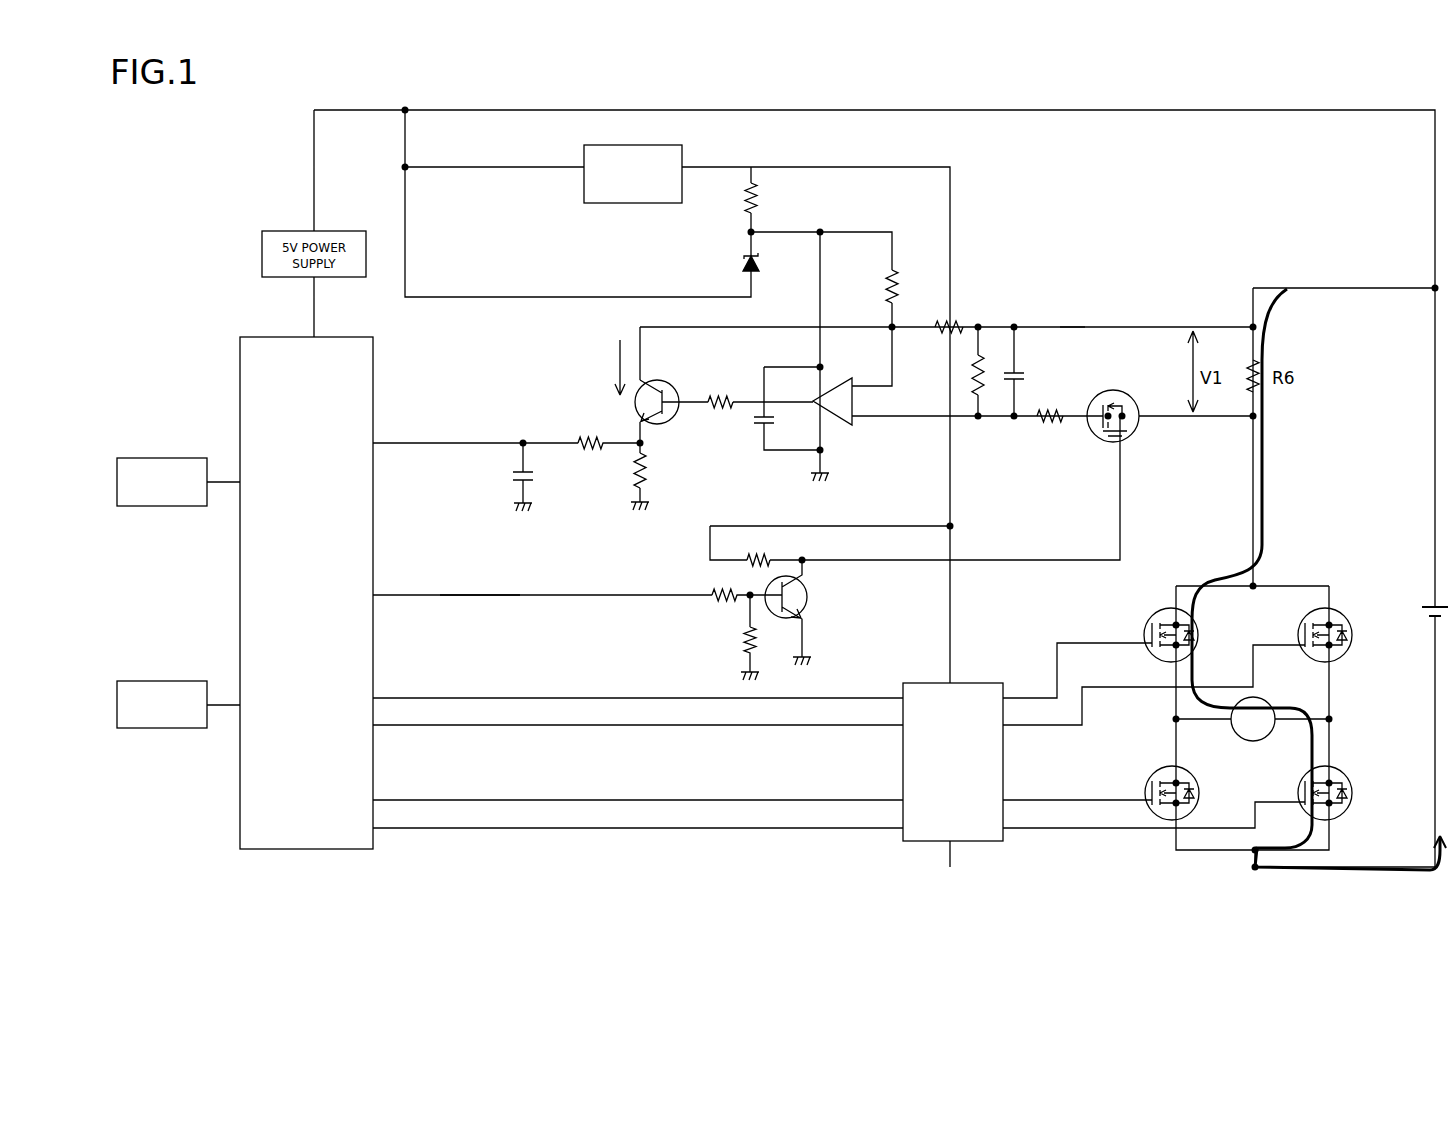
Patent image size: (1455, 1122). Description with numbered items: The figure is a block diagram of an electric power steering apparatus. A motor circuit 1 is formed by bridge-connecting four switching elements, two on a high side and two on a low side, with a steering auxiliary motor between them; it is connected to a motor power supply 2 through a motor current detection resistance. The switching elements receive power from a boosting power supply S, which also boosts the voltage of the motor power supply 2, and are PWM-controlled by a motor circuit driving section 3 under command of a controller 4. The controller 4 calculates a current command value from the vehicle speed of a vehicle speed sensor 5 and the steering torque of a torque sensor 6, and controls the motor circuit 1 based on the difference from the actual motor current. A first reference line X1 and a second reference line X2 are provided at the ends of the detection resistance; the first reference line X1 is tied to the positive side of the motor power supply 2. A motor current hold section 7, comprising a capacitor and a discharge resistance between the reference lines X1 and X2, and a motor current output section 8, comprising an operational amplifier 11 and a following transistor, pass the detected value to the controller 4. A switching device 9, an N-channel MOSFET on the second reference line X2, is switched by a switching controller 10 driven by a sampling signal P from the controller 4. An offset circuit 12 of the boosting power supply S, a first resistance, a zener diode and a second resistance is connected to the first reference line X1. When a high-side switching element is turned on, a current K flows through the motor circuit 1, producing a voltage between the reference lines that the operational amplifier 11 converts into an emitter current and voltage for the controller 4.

The motor circuit 1 is at (1297, 563).
The motor power supply 2 is at (1430, 600).
The motor circuit driving section 3 is at (935, 832).
The controller 4 is at (290, 840).
The vehicle speed sensor 5 is at (145, 465).
The torque sensor 6 is at (145, 690).
The motor current hold section 7 is at (995, 308).
The motor current output section 8 is at (687, 505).
The switching device 9 is at (1118, 383).
The switching controller 10 is at (783, 620).
The operational amplifier 11 is at (830, 408).
The offset circuit 12 is at (857, 202).
The boosting power supply S is at (634, 146).
The current K is at (1290, 290).
The first reference line X1 is at (1072, 327).
The second reference line X2 is at (1073, 418).
The sampling signal P is at (470, 597).